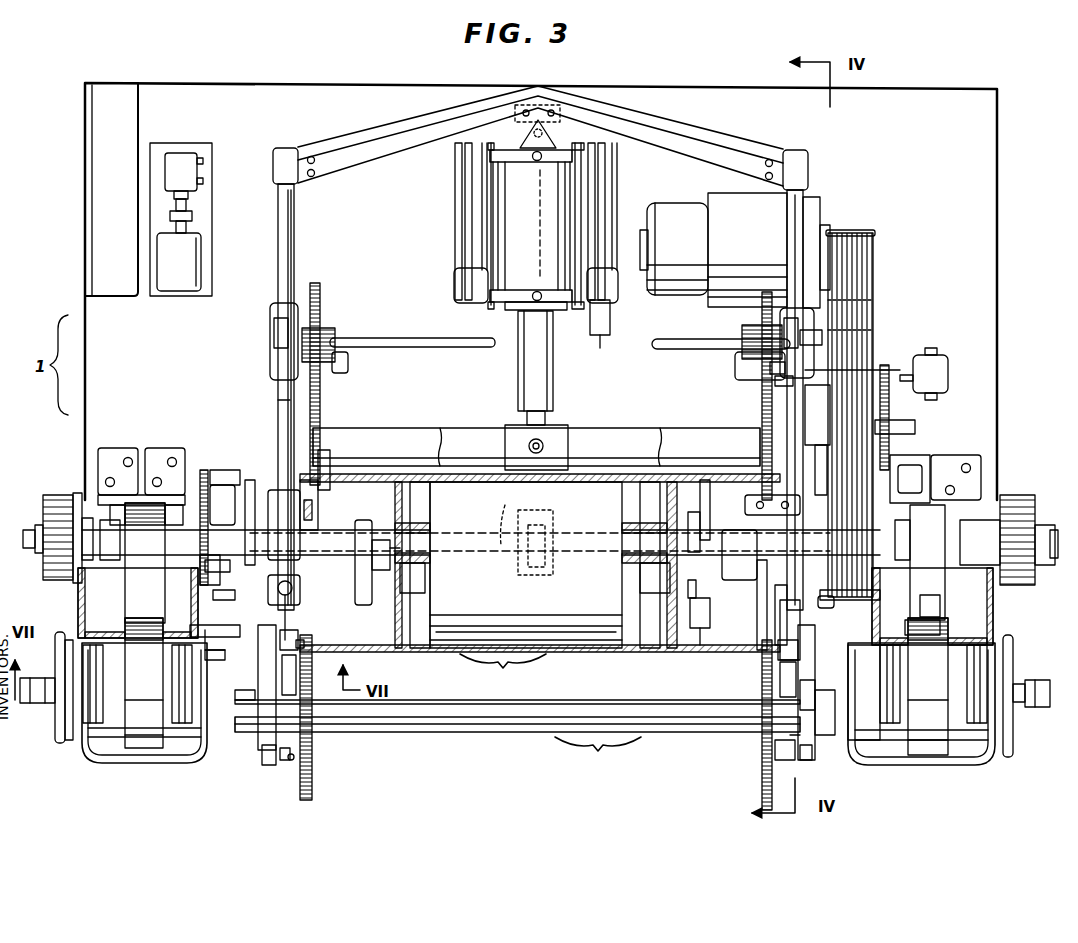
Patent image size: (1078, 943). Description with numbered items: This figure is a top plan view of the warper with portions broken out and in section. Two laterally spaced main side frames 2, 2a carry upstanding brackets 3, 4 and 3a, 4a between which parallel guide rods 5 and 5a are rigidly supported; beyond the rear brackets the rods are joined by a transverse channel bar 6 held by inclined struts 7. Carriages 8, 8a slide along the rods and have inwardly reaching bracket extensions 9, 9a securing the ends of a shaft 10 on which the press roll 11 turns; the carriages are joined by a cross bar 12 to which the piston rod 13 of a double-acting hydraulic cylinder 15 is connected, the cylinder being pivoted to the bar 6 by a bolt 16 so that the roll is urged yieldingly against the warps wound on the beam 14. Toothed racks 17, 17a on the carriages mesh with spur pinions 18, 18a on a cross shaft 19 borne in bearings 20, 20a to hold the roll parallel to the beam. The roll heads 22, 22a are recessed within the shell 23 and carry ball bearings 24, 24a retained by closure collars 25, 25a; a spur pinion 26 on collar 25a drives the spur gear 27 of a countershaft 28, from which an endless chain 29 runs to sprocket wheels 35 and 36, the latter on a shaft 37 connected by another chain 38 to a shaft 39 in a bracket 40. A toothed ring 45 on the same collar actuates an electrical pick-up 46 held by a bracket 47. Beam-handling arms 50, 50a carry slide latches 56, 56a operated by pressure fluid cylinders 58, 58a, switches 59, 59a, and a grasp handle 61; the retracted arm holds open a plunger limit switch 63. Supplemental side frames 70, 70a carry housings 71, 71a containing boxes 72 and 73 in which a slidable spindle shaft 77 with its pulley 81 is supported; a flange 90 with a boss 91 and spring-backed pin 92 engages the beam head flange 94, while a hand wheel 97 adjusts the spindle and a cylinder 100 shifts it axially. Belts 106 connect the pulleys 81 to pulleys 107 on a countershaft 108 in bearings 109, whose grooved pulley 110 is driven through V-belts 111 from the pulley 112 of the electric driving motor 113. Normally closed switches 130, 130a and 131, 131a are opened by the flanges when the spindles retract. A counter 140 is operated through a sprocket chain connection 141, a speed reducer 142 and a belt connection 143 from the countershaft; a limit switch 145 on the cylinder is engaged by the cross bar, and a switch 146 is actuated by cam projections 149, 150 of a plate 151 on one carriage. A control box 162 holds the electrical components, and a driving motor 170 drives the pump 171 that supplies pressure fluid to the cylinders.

The main side frame 2 is at (272, 402).
The main side frame 2a is at (758, 404).
The upstanding bracket 3 is at (280, 606).
The upstanding bracket 3a is at (800, 642).
The upstanding bracket 4 is at (278, 366).
The upstanding bracket 4a is at (800, 318).
The guide rod 5 is at (278, 252).
The guide rod 5a is at (787, 230).
The transverse channel bar 6 is at (396, 138).
The inclined strut 7 is at (455, 222).
The carriage 8 is at (269, 575).
The carriage 8a is at (740, 566).
The bracket extension 9 is at (341, 570).
The bracket extension 9a is at (760, 588).
The shaft 10 is at (408, 564).
The press roll 11 is at (503, 675).
The cross bar 12 is at (596, 440).
The piston rod 13 is at (540, 378).
The beam 14 is at (598, 759).
The double-acting hydraulic cylinder 15 is at (536, 226).
The bolt 16 is at (547, 132).
The toothed rack 17 is at (320, 406).
The toothed rack 17a is at (775, 384).
The spur pinion 18 is at (326, 334).
The spur pinion 18a is at (750, 344).
The cross shaft 19 is at (467, 348).
The bearing 20 is at (272, 338).
The bearing 20a is at (800, 340).
The press roll head 22 is at (420, 498).
The press roll head 22a is at (652, 506).
The shell 23 is at (372, 476).
The ball bearing 24 is at (410, 540).
The ball bearing 24a is at (660, 540).
The closure collar 25 is at (392, 590).
The closure collar 25a is at (670, 588).
The spur pinion 26 is at (700, 640).
The spur gear 27 is at (705, 480).
The countershaft 28 is at (727, 542).
The endless chain 29 is at (802, 442).
The sprocket wheel 35 is at (833, 606).
The sprocket wheel 36 is at (812, 356).
The shaft 37 is at (770, 366).
The chain 38 is at (840, 378).
The shaft 39 is at (919, 422).
The bracket 40 is at (915, 432).
The toothed ring 45 is at (688, 525).
The electrical pick-up 46 is at (690, 628).
The bracket 47 is at (698, 650).
The arm 50 is at (300, 624).
The arm 50a is at (778, 650).
The slide latch 56 is at (298, 664).
The slide latch 56a is at (780, 676).
The pressure fluid cylinder 58 is at (292, 708).
The pressure fluid cylinder 58a is at (790, 736).
The electric switch 59 is at (267, 675).
The electric switch 59a is at (798, 690).
The grasp handle 61 is at (230, 644).
The plunger limit switch 63 is at (306, 642).
The supplemental side frame 70 is at (80, 610).
The supplemental side frame 70a is at (995, 610).
The housing 71 is at (135, 758).
The housing 71a is at (930, 766).
The box 72 is at (95, 740).
The box 73 is at (195, 736).
The shaft 77 is at (238, 710).
The pulley 81 is at (536, 686).
The circular flange 90 is at (265, 752).
The boss 91 is at (283, 760).
The spring-backed pin 92 is at (290, 762).
The head flange 94 is at (312, 766).
The hand wheel 97 is at (1020, 632).
The double acting pressure fluid cylinder 100 is at (47, 705).
The belt 106 is at (138, 596).
The pulley 107 is at (146, 520).
The countershaft 108 is at (198, 432).
The bearing 109 is at (160, 455).
The grooved pulley 110 is at (922, 562).
The V-belt 111 is at (860, 335).
The pulley 112 is at (874, 242).
The electric driving motor 113 is at (728, 194).
The switch 130 is at (228, 598).
The switch 130a is at (895, 608).
The switch 131 is at (224, 644).
The switch 131a is at (930, 640).
The counter 140 is at (203, 581).
The sprocket chain connection 141 is at (222, 535).
The speed reducer 142 is at (245, 484).
The belt connection 143 is at (250, 480).
The limit switch 145 is at (608, 322).
The switch 146 is at (318, 502).
The cam projection 149 is at (223, 560).
The cam projection 150 is at (330, 470).
The plate 151 is at (226, 505).
The control box 162 is at (100, 150).
The driving motor 170 is at (178, 275).
The pump 171 is at (178, 160).